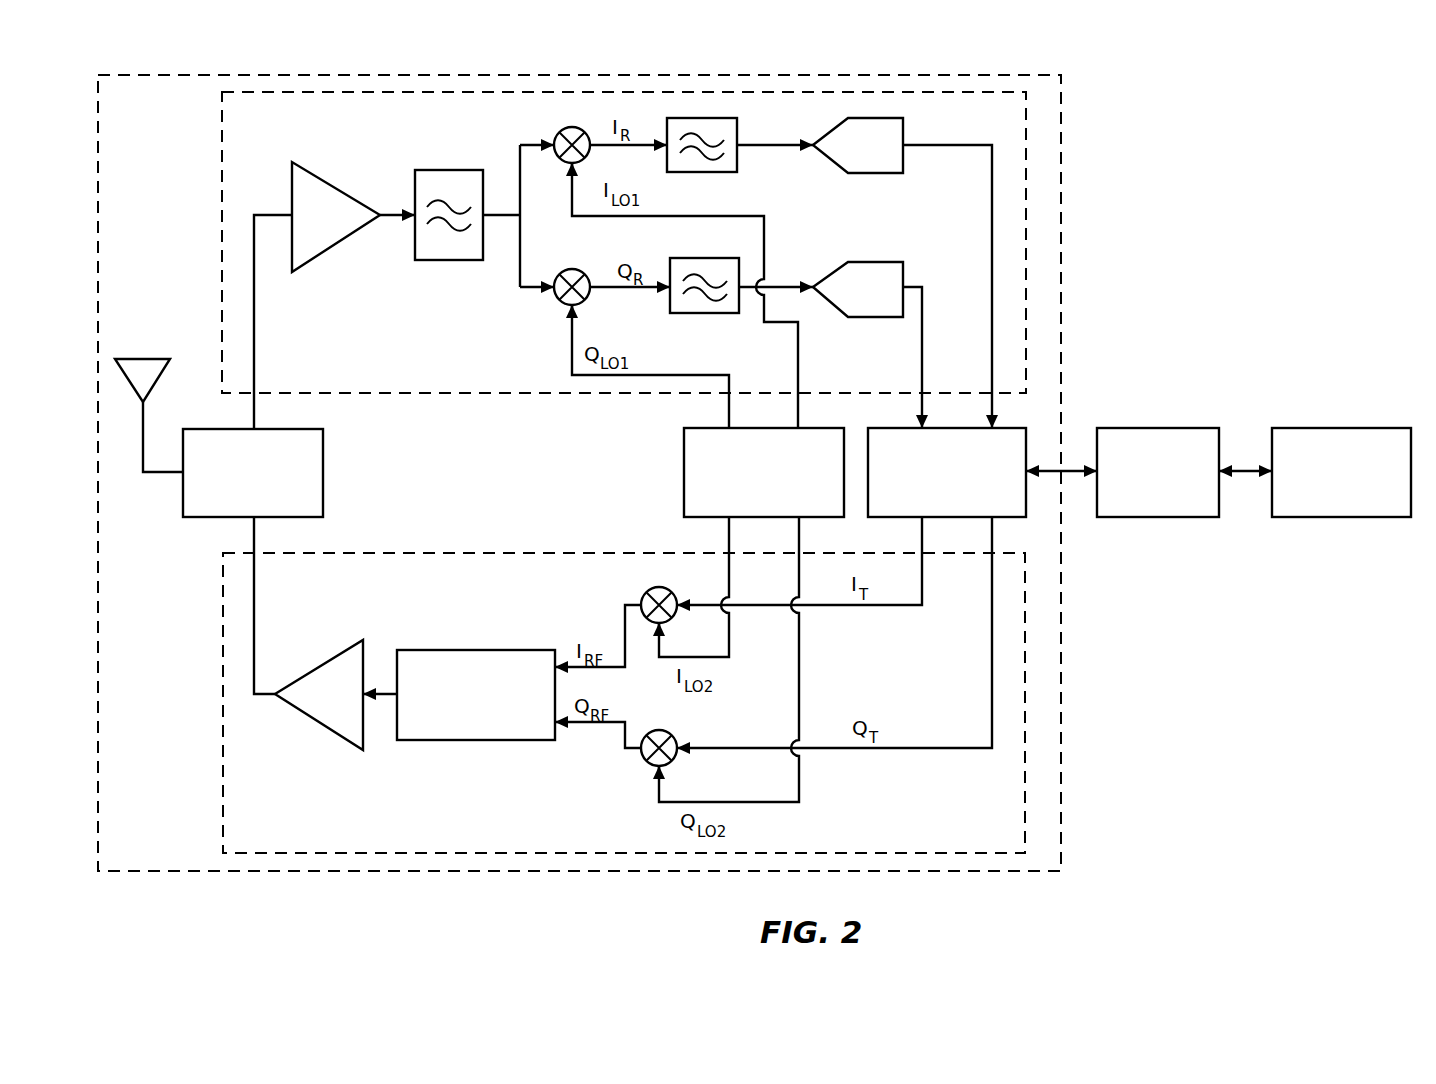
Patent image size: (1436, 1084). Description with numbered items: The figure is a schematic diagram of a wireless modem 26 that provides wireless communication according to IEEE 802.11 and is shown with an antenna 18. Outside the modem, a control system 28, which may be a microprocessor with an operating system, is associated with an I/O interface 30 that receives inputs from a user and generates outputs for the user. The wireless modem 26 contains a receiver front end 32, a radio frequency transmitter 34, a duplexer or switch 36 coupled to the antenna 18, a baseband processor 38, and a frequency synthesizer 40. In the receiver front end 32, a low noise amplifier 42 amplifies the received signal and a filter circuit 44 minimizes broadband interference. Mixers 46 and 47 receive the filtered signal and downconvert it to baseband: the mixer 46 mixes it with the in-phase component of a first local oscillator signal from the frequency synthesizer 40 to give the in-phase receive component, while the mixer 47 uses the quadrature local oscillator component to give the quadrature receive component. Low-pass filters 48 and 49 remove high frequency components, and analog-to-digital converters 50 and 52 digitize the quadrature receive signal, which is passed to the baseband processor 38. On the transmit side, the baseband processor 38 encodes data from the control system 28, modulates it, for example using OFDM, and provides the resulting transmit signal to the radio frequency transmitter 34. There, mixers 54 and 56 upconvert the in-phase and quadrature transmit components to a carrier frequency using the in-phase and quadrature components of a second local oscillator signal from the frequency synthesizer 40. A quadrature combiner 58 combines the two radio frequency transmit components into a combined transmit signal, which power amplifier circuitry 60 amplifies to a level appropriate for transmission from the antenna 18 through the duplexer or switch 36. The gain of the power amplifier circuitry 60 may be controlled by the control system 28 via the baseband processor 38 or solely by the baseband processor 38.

The antenna 18 is at (158, 359).
The wireless modem 26 is at (579, 473).
The control system 28 is at (1205, 428).
The I/O interface 30 is at (1378, 428).
The receiver front end 32 is at (624, 242).
The radio frequency transmitter 34 is at (624, 703).
The duplexer or switch 36 is at (323, 451).
The baseband processor 38 is at (1003, 428).
The frequency synthesizer 40 is at (684, 444).
The low noise amplifier 42 is at (335, 189).
The filter circuit 44 is at (448, 170).
The mixer 46 is at (572, 127).
The mixer 47 is at (577, 269).
The low-pass filter 48 is at (737, 124).
The low-pass filter 49 is at (700, 258).
The analog-to-digital converter 50 is at (903, 122).
The analog-to-digital converter 52 is at (903, 266).
The mixer 54 is at (670, 591).
The mixer 56 is at (670, 734).
The quadrature combiner 58 is at (520, 650).
The power amplifier circuitry 60 is at (350, 651).